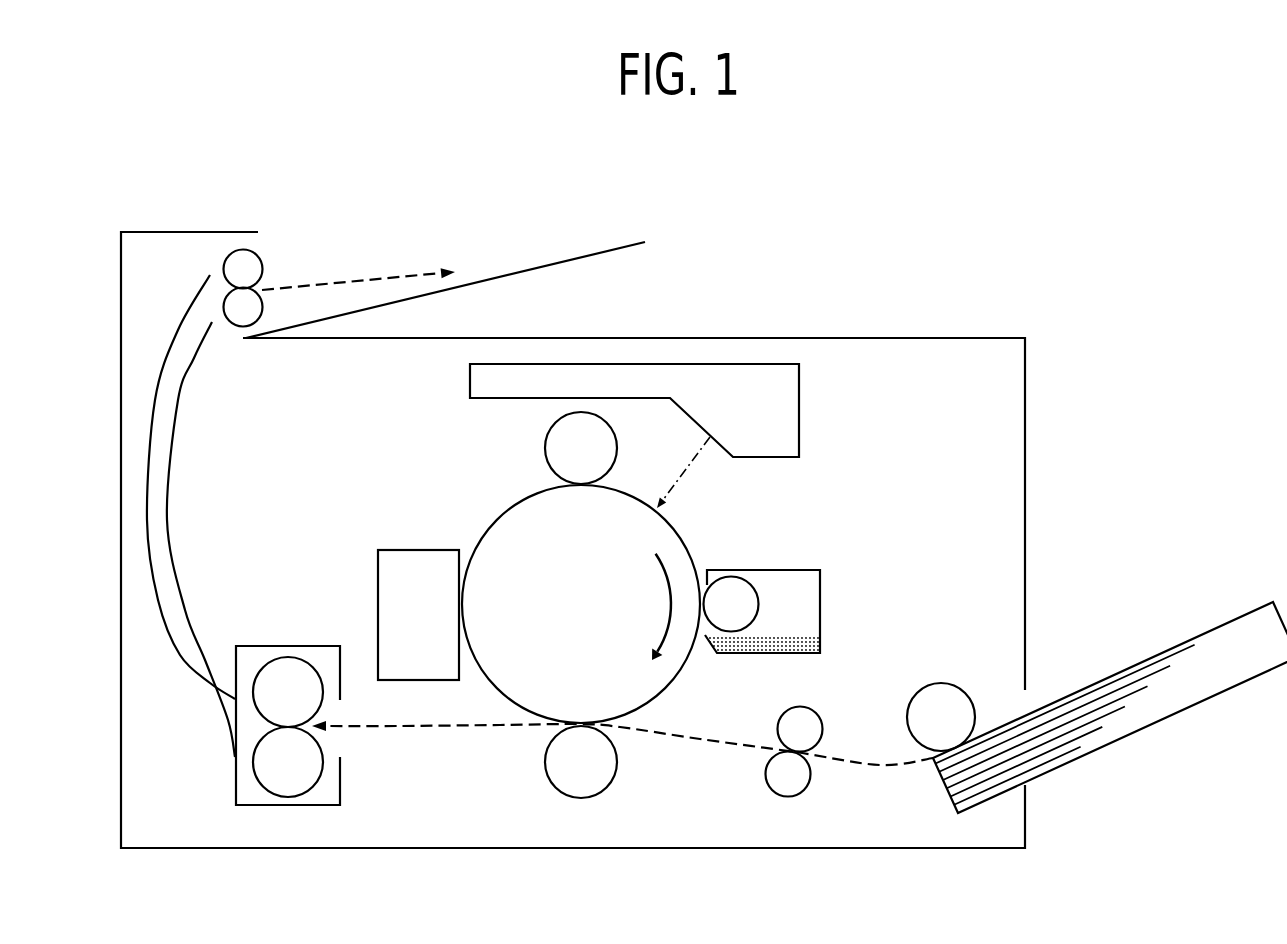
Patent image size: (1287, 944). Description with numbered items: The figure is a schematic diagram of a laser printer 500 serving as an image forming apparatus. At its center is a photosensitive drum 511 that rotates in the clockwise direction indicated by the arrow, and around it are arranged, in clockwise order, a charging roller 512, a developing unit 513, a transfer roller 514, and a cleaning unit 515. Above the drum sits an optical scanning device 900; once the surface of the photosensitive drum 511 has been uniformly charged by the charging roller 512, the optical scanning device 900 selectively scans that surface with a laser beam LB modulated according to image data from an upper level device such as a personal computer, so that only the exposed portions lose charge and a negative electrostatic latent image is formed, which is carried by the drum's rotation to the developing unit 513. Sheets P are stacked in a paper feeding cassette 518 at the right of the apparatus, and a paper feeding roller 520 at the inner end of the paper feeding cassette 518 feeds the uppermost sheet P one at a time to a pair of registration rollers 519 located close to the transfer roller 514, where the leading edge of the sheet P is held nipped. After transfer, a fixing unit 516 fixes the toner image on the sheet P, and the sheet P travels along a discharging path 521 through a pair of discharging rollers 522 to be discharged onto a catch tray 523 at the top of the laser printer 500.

The laser printer 500 is at (900, 191).
The photosensitive drum 511 is at (680, 673).
The charging roller 512 is at (546, 448).
The developing unit 513 is at (800, 570).
The transfer roller 514 is at (617, 764).
The cleaning unit 515 is at (421, 550).
The fixing unit 516 is at (287, 646).
The paper feeding cassette 518 is at (1163, 718).
The pair of registration rollers 519 is at (840, 692).
The paper feeding roller 520 is at (951, 683).
The discharging path 521 is at (146, 523).
The pair of discharging rollers 522 is at (257, 261).
The catch tray 523 is at (594, 252).
The optical scanning device 900 is at (800, 424).
The laser beam LB is at (690, 468).
The sheet P is at (1142, 672).